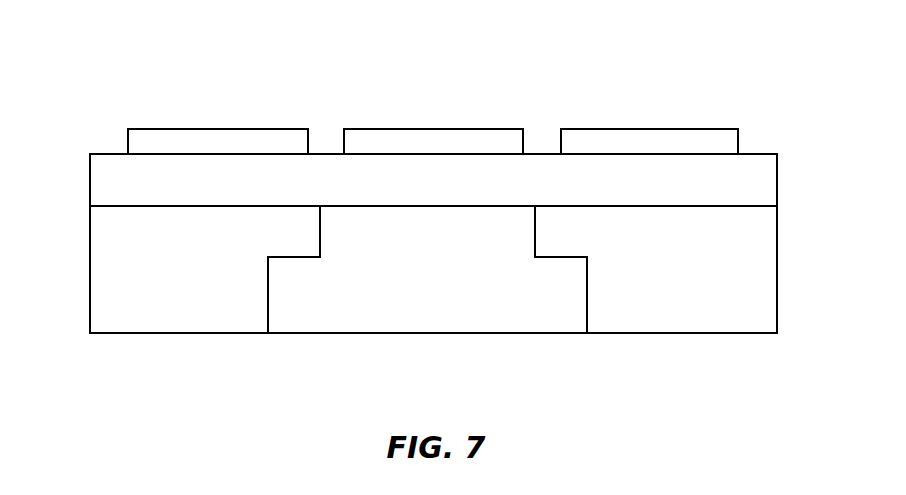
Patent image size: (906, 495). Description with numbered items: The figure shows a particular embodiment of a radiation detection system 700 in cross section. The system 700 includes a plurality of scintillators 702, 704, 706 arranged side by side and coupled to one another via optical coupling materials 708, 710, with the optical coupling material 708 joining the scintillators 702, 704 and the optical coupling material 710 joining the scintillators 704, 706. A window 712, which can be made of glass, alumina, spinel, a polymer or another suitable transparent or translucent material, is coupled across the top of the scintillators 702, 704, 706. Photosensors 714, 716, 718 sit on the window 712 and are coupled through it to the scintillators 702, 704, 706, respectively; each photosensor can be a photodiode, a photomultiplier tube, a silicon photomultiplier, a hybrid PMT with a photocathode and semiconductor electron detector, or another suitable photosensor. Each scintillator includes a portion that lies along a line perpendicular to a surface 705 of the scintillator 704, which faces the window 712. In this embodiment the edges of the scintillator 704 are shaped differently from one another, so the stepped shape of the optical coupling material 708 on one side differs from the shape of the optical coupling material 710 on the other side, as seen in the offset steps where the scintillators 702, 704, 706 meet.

The radiation detection system 700 is at (77, 29).
The scintillator 702 is at (191, 266).
The scintillator 704 is at (438, 277).
The surface 705 is at (378, 208).
The scintillator 706 is at (693, 279).
The optical coupling material 708 is at (267, 334).
The optical coupling material 710 is at (587, 334).
The window 712 is at (438, 187).
The photosensor 714 is at (215, 128).
The photosensor 716 is at (433, 128).
The photosensor 718 is at (675, 128).